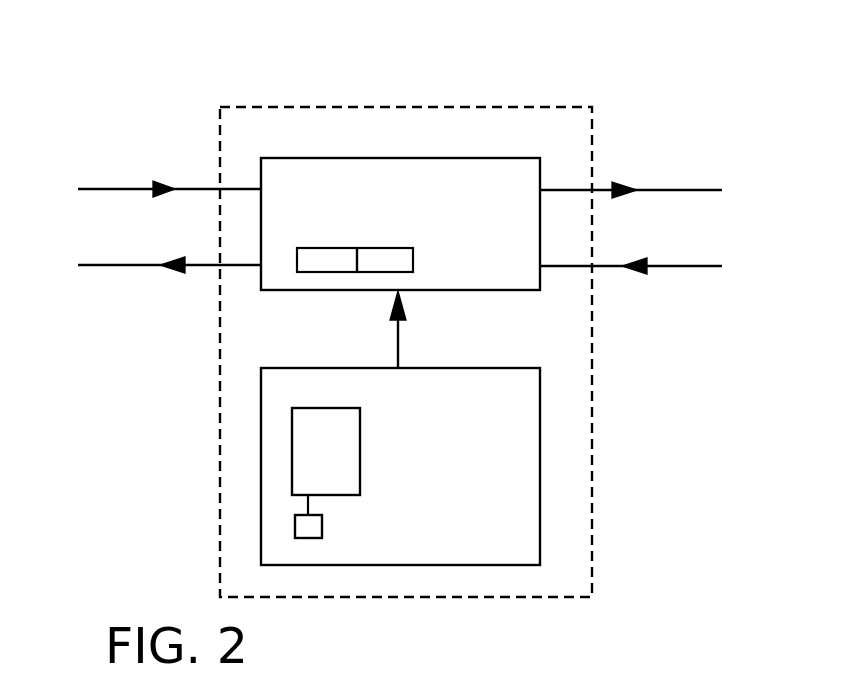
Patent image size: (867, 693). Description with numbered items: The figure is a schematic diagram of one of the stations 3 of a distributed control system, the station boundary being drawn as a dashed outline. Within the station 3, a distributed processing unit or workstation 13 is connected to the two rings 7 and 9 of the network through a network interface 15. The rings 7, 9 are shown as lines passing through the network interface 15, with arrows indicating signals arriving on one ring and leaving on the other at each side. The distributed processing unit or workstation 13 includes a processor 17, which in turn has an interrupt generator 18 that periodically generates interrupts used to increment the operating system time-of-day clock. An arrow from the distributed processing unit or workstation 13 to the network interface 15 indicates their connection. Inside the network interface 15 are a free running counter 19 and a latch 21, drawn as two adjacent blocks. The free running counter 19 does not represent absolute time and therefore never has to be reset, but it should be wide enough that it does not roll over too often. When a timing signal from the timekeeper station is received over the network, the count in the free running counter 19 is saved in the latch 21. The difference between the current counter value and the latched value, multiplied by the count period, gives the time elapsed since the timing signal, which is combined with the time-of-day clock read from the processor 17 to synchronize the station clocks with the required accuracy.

The station 3 is at (510, 105).
The ring 7 is at (138, 189).
The ring 9 is at (142, 265).
The distributed processing unit and workstation 13 is at (540, 472).
The network interface 15 is at (370, 158).
The processor 17 is at (360, 472).
The interrupt generator 18 is at (314, 520).
The free running counter 19 is at (320, 248).
The latch 21 is at (397, 248).